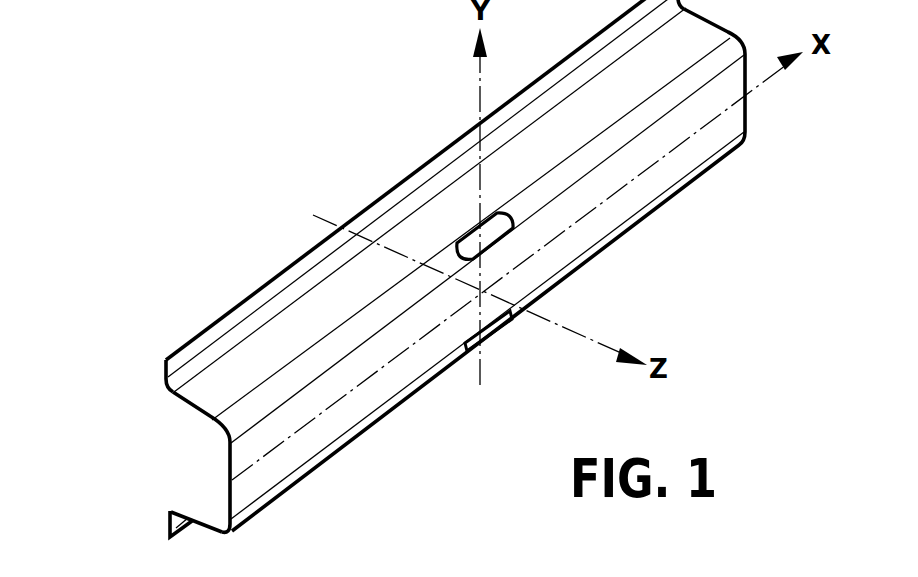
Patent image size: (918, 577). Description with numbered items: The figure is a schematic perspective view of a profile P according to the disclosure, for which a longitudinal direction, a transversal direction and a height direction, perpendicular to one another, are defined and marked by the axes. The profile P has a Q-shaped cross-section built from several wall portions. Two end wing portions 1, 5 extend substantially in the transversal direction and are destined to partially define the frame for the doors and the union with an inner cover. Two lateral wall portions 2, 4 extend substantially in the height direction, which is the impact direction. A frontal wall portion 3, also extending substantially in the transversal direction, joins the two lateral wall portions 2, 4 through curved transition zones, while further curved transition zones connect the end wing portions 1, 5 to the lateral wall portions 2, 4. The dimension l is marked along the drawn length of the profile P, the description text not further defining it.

The end wing portion 1 is at (288, 287).
The lateral wall portion 2 is at (418, 232).
The frontal wall portion 3 is at (343, 418).
The lateral wall portion 4 is at (186, 508).
The end wing portion 5 is at (168, 525).
The length of profile l is at (228, 462).
The profile P is at (173, 300).